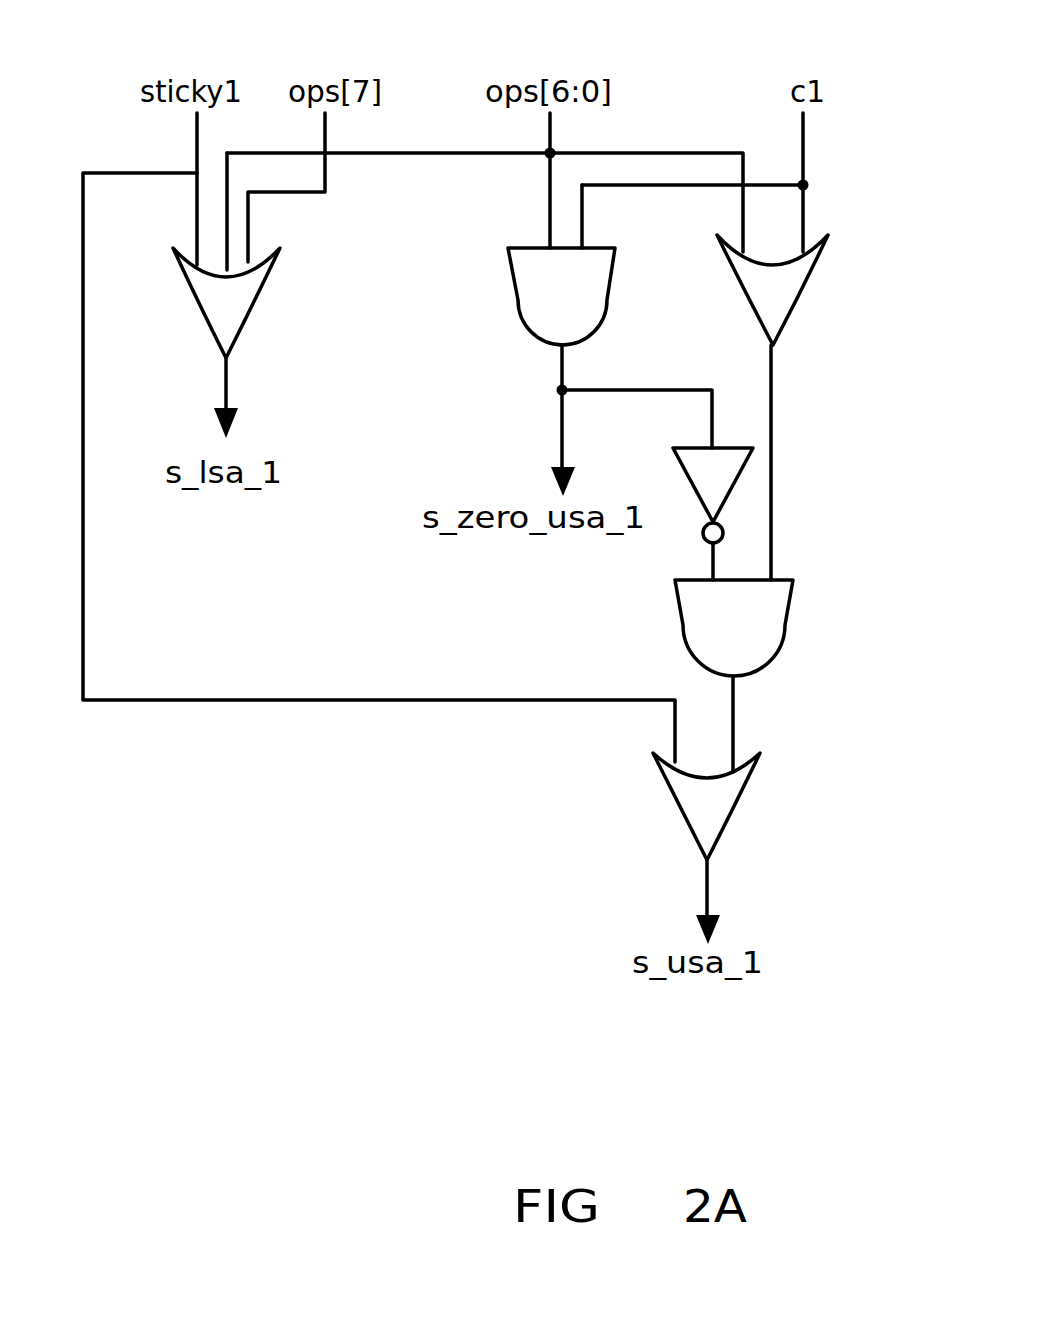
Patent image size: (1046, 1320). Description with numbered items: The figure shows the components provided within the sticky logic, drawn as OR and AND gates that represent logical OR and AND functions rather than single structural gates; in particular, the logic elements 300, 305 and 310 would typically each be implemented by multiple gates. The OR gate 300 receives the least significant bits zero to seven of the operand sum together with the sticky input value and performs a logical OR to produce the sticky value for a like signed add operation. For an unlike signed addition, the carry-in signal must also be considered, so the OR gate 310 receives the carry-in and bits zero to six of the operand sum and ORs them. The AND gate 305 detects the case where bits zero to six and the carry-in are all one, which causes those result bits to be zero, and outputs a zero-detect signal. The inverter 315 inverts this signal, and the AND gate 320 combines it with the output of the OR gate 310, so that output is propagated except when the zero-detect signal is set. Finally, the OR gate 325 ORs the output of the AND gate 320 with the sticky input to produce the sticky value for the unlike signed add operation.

The OR gate 300 is at (260, 313).
The AND gate 305 is at (518, 312).
The OR gate 310 is at (795, 317).
The inverter 315 is at (690, 482).
The AND gate 320 is at (782, 633).
The OR gate 325 is at (737, 818).